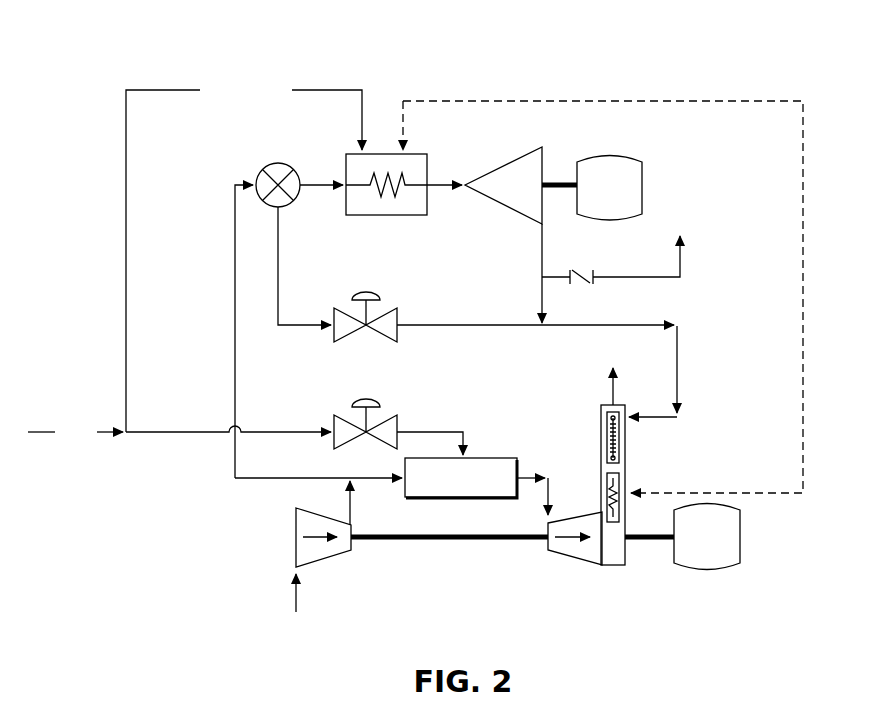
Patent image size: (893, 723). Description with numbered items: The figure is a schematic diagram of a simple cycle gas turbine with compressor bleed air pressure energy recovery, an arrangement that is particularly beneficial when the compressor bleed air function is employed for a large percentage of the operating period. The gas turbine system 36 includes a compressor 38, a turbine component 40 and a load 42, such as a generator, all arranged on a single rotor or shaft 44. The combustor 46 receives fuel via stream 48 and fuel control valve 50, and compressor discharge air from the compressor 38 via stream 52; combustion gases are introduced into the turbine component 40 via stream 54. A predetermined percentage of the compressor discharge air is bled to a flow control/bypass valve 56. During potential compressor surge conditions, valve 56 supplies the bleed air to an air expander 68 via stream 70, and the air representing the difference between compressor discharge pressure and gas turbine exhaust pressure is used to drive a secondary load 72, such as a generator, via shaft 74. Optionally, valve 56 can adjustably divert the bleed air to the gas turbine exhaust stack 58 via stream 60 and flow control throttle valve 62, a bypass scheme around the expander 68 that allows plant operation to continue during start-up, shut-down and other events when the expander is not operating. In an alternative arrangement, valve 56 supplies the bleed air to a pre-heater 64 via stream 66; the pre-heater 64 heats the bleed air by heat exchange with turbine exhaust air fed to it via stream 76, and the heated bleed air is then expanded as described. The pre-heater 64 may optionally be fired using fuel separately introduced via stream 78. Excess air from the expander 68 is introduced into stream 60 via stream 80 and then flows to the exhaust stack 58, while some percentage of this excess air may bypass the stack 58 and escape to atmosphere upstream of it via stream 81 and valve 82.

The gas turbine system 36 is at (736, 60).
The compressor 38 is at (309, 553).
The turbine component 40 is at (585, 556).
The load 42 is at (713, 562).
The shaft 44 is at (478, 542).
The combustor 46 is at (505, 458).
The fuel stream 48 is at (463, 430).
The fuel control valve 50 is at (386, 418).
The compressor discharge air stream 52 is at (352, 506).
The combustion gas stream 54 is at (553, 500).
The flow control/bypass valve 56 is at (255, 176).
The gas turbine exhaust stack 58 is at (625, 463).
The bypass stream 60 is at (279, 248).
The flow control throttle valve 62 is at (387, 312).
The pre-heater 64 is at (420, 175).
The bleed air stream to pre-heater 66 is at (315, 181).
The air expander 68 is at (493, 193).
The bleed air stream to expander 70 is at (432, 187).
The secondary load 72 is at (627, 173).
The shaft 74 is at (562, 181).
The turbine exhaust air stream 76 is at (806, 218).
The fuel stream 78 is at (126, 238).
The excess air stream 80 is at (547, 247).
The bypass-to-atmosphere stream 81 is at (623, 275).
The valve 82 is at (582, 279).